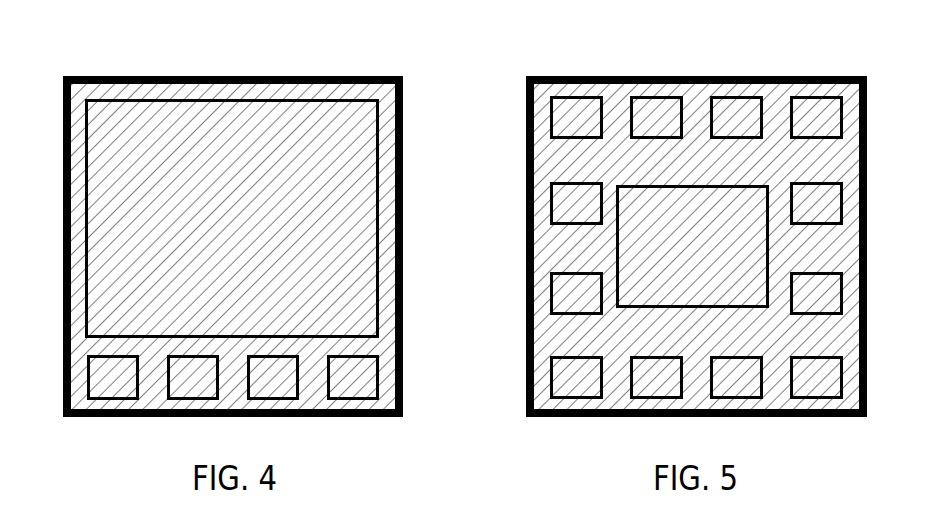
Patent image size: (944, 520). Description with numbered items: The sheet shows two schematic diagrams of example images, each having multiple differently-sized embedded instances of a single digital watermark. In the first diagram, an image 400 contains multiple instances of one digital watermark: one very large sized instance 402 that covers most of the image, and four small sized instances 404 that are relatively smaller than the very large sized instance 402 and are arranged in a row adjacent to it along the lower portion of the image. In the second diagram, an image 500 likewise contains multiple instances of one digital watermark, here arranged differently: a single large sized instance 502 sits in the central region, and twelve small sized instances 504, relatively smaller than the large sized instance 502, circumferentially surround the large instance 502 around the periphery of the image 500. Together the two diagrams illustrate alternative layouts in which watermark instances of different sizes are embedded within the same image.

In FIG. 4, the image 400 is at (112, 77).
In FIG. 4, the very large sized instance 402 is at (292, 103).
In FIG. 4, the small sized instances 404 is at (327, 399).
In FIG. 5, the image 500 is at (577, 77).
In FIG. 5, the large sized instance 502 is at (616, 260).
In FIG. 5, the small sized instances 504 is at (733, 97).